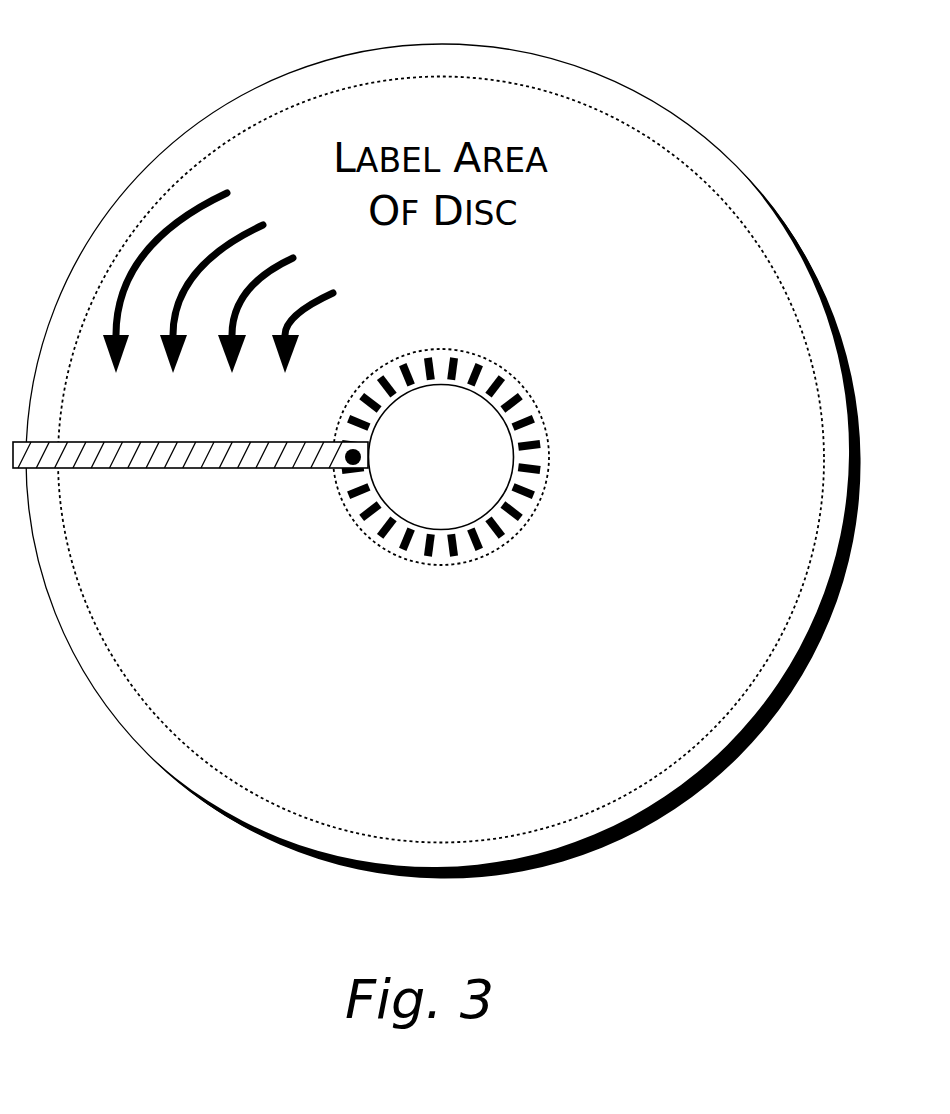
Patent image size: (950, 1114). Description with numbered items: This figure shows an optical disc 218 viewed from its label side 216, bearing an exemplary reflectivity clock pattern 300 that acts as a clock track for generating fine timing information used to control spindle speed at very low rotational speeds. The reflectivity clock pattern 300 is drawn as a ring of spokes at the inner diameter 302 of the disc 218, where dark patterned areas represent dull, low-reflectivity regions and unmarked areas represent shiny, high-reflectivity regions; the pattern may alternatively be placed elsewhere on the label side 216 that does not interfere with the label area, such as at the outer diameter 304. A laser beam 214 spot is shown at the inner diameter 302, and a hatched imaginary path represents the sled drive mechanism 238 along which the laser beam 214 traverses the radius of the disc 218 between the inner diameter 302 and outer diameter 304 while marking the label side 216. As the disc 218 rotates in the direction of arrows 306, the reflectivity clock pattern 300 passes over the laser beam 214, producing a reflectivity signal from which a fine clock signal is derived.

The label side 216 is at (688, 330).
The optical disc 218 is at (263, 82).
The outer diameter 304 is at (638, 115).
The arrows 306 is at (178, 220).
The reflectivity clock pattern 300 is at (493, 380).
The inner diameter 302 is at (542, 482).
The sled drive mechanism 238 is at (162, 442).
The laser beam 214 is at (350, 450).